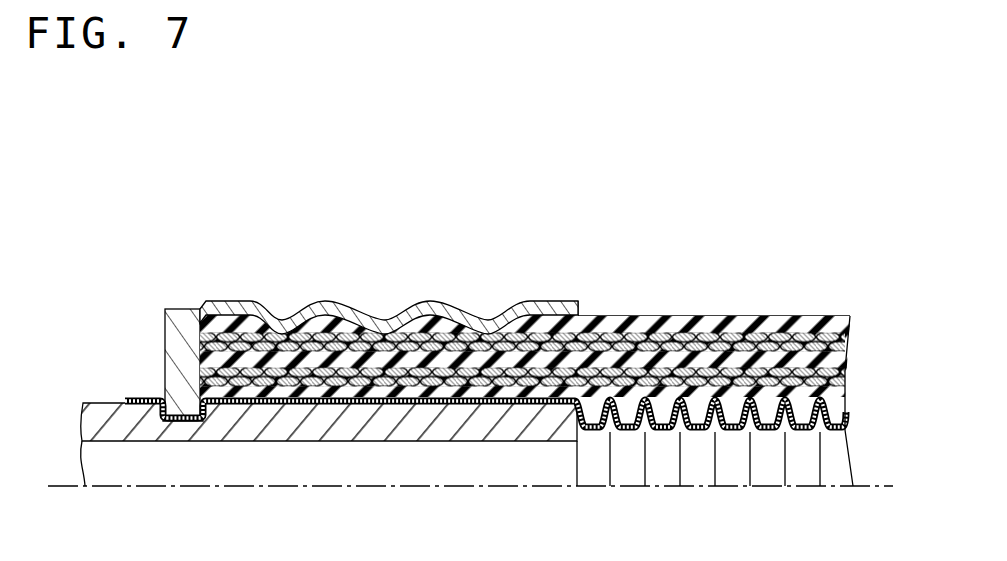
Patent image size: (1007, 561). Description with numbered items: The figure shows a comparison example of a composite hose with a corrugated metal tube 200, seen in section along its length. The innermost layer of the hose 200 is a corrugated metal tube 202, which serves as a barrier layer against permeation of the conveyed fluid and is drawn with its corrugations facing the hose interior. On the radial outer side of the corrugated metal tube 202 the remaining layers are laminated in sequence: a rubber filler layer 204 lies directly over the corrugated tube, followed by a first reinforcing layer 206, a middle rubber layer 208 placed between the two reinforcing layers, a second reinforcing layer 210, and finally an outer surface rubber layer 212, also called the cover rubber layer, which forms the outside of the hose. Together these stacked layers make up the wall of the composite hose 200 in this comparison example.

The composite hose with a corrugated metal tube 200 is at (527, 354).
The corrugated metal tube 202 is at (662, 450).
The rubber filler layer 204 is at (784, 392).
The first reinforcing layer 206 is at (838, 370).
The middle rubber layer 208 is at (700, 327).
The second reinforcing layer 210 is at (772, 328).
The outer surface rubber layer 212 is at (818, 323).